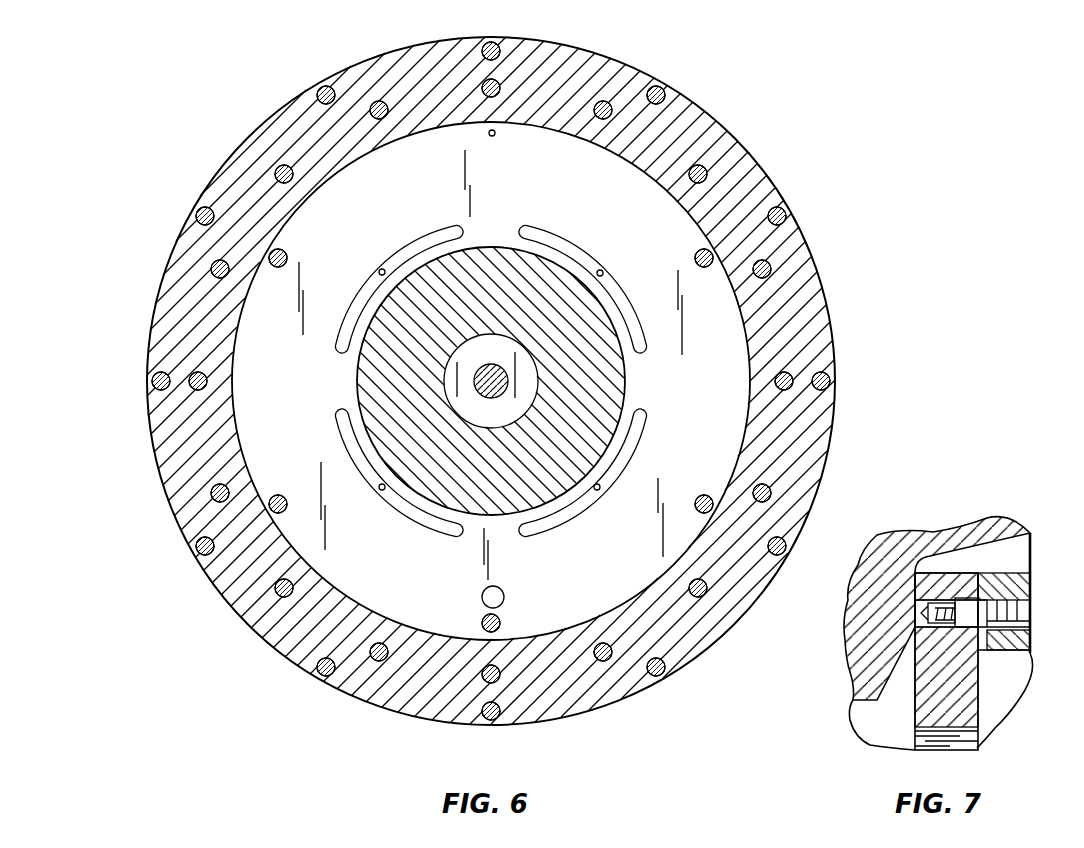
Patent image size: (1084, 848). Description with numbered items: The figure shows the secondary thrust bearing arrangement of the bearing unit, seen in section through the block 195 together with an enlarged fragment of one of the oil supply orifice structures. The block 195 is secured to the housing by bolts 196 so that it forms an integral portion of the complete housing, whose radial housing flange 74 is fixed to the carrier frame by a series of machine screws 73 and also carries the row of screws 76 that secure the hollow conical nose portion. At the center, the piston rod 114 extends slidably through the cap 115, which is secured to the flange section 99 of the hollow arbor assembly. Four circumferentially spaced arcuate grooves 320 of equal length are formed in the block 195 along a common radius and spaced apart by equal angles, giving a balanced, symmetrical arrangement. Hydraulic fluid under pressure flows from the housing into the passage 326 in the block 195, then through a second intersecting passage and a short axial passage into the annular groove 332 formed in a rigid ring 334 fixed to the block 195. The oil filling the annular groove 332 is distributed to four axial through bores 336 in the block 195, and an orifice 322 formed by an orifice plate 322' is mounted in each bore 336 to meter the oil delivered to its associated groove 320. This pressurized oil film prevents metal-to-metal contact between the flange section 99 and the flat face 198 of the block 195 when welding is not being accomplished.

In FIG. 6, the machine screws 73 is at (517, 397).
In FIG. 6, the radial housing flange 74 is at (566, 712).
In FIG. 6, the screws 76 is at (214, 271).
In FIG. 7, the flange section 99 is at (862, 702).
In FIG. 6, the piston rod 114 is at (503, 370).
In FIG. 6, the cap 115 is at (530, 379).
In FIG. 6, the block 195 is at (570, 573).
In FIG. 7, the block 195 is at (964, 685).
In FIG. 6, the bolts 196 is at (275, 494).
In FIG. 6, the flat face 198 is at (343, 350).
In FIG. 7, the flat face 198 is at (915, 713).
In FIG. 6, the arcuate grooves 320 is at (353, 298).
In FIG. 7, the arcuate grooves 320 is at (928, 622).
In FIG. 6, the orifice 322 is at (507, 384).
In FIG. 7, the orifice 322 is at (908, 611).
In FIG. 7, the orifice plate 322' is at (959, 589).
In FIG. 6, the passage 326 is at (495, 136).
In FIG. 7, the annular groove 332 is at (985, 624).
In FIG. 7, the rigid ring 334 is at (1031, 638).
In FIG. 7, the axial through bores 336 is at (966, 622).